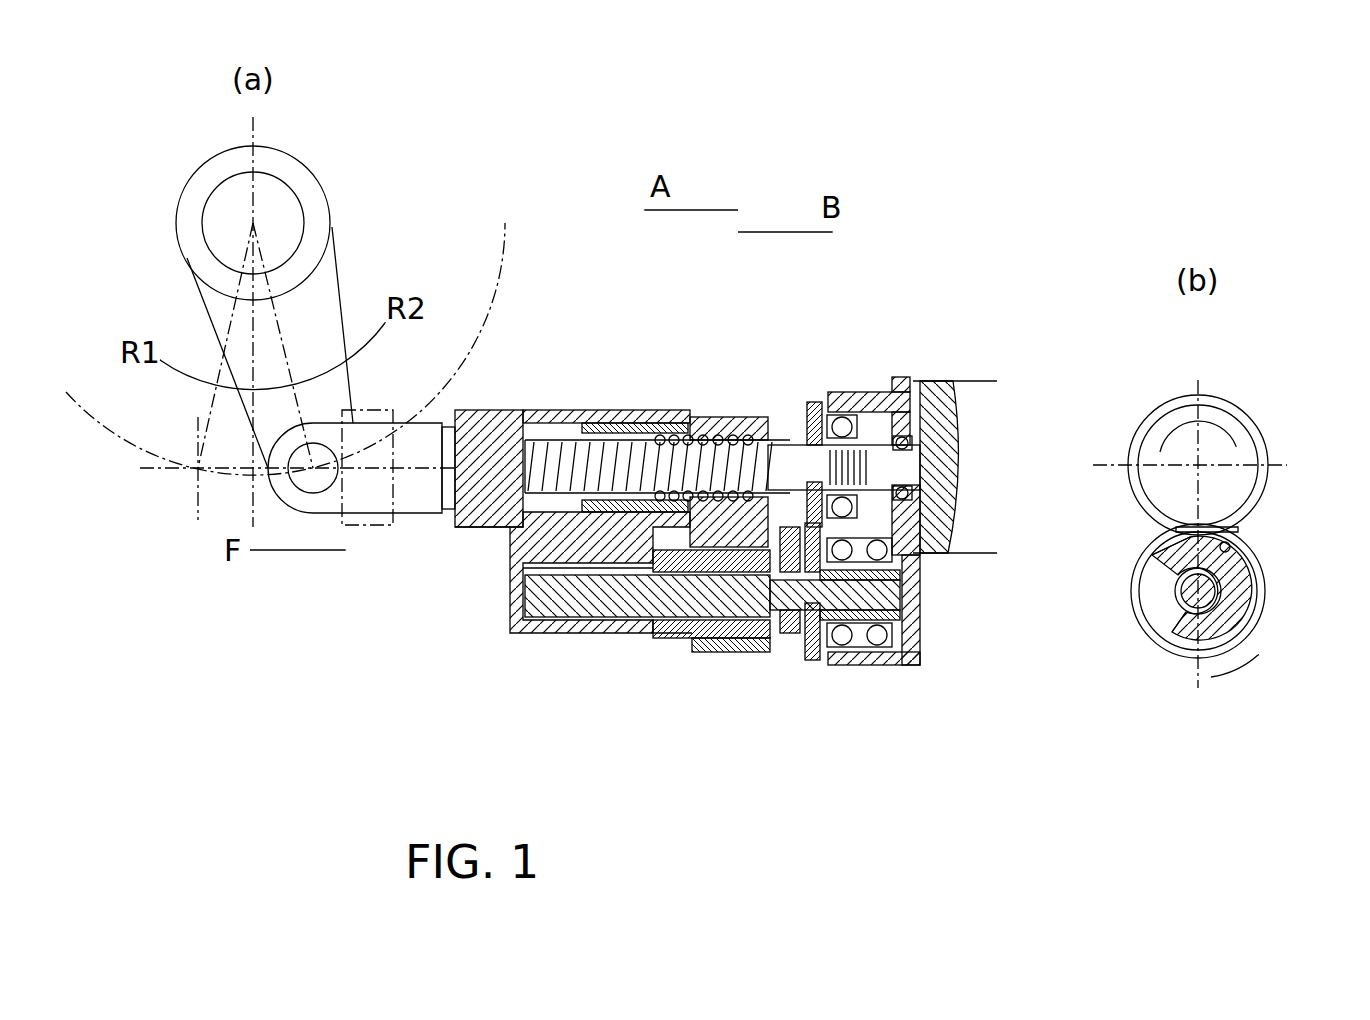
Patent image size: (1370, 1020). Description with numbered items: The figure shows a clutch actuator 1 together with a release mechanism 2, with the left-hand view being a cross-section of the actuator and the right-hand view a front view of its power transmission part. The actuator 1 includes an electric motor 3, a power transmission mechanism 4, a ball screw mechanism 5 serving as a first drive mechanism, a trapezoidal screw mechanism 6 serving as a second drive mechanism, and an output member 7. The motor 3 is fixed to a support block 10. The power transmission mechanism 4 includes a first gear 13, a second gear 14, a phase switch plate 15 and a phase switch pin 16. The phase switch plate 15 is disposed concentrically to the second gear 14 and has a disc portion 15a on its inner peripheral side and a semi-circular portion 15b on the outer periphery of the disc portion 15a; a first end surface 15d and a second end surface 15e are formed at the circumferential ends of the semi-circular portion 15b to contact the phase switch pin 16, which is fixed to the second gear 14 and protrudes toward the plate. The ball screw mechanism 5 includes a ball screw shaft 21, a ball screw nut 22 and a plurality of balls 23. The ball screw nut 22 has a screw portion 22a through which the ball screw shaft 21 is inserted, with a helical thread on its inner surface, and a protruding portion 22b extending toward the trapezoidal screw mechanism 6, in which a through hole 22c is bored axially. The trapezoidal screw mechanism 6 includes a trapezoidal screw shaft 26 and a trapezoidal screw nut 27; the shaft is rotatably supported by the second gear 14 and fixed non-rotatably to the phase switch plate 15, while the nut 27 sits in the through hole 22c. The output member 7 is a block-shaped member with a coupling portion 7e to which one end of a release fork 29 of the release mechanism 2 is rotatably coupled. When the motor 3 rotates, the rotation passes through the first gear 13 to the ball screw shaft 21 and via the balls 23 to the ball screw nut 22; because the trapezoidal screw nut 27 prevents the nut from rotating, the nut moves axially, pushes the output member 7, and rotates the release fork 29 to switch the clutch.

The clutch actuator 1 is at (652, 333).
The release mechanism 2 is at (365, 290).
The electric motor 3 is at (967, 381).
The power transmission mechanism 4 is at (820, 370).
The ball screw mechanism 5 is at (730, 370).
The trapezoidal screw mechanism 6 is at (678, 652).
The output member 7 is at (465, 527).
The coupling portion 7e is at (408, 505).
The support block 10 is at (905, 665).
The first gear 13 is at (812, 400).
The second gear 14 is at (812, 657).
The phase switch plate 15 is at (785, 660).
The disc portion 15a is at (1223, 613).
The semi-circular portion 15b is at (1172, 566).
The first end surface 15d is at (1172, 624).
The second end surface 15e is at (1217, 557).
The phase switch pin 16 is at (772, 408).
The ball screw shaft 21 is at (541, 410).
The ball screw nut 22 is at (540, 538).
The screw portion 22a is at (597, 410).
The protruding portion 22b is at (708, 652).
The through hole 22c is at (743, 638).
The balls 23 is at (665, 438).
The trapezoidal screw shaft 26 is at (577, 603).
The trapezoidal screw nut 27 is at (670, 633).
The release fork 29 is at (215, 317).